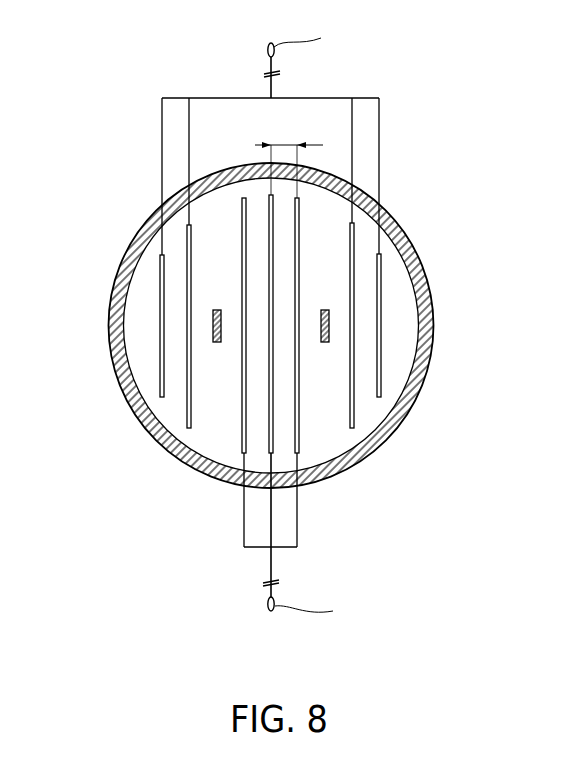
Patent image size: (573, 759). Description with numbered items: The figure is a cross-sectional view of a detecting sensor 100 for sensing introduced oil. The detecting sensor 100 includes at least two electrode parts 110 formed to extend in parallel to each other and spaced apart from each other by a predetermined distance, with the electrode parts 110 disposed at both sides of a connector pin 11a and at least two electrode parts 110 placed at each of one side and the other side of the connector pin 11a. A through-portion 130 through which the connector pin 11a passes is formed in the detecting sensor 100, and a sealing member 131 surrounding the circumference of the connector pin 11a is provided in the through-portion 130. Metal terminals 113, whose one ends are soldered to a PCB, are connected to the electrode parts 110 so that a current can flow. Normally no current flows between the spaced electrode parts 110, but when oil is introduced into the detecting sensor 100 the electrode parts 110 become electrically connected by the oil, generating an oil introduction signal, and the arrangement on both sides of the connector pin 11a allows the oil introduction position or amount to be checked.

The detecting sensor 100 is at (269, 322).
The electrode parts 110 is at (381, 284).
The metal terminals 113 is at (273, 81).
The connector pin 11a is at (213, 325).
The through-portion 130 is at (329, 322).
The sealing member 131 is at (403, 418).